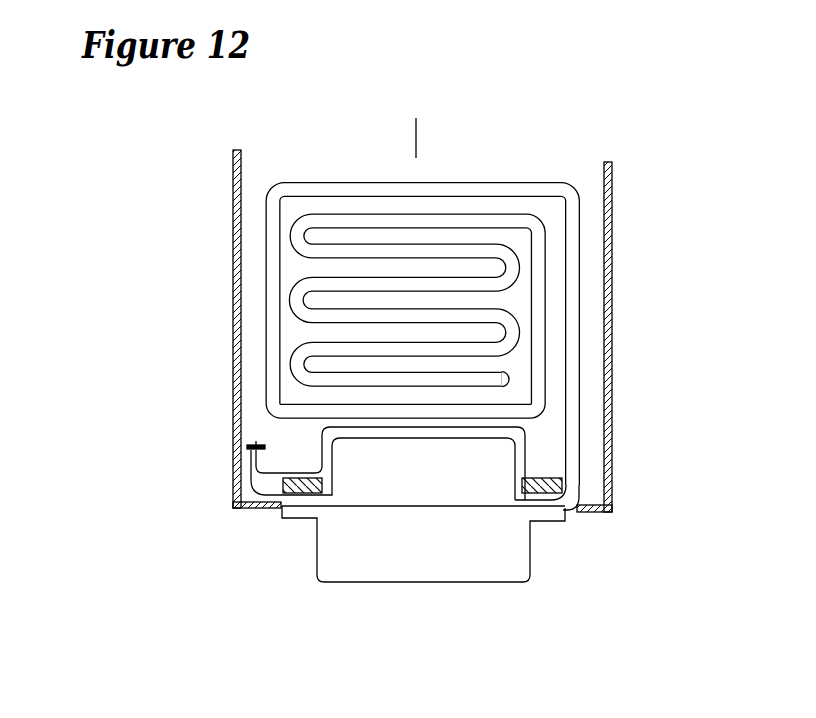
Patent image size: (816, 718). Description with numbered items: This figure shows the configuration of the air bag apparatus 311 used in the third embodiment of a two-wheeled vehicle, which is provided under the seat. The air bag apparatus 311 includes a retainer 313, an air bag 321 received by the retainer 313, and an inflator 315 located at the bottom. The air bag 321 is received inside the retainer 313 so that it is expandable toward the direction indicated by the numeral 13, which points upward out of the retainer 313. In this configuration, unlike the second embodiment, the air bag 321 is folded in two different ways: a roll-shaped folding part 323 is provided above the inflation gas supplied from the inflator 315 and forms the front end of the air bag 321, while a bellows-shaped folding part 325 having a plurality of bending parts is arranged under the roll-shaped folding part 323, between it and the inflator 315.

The expansion direction 13 is at (416, 158).
The air bag apparatus 311 is at (470, 313).
The retainer 313 is at (610, 330).
The inflator 315 is at (455, 553).
The air bag 321 is at (573, 275).
The roll-shaped folding part 323 is at (423, 298).
The bellows-shaped folding part 325 is at (297, 267).